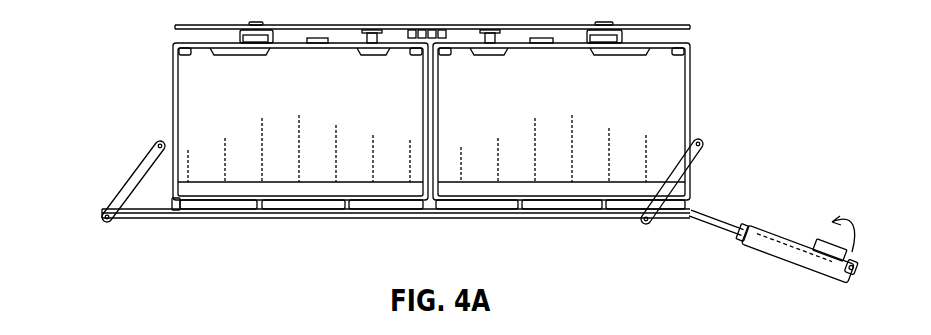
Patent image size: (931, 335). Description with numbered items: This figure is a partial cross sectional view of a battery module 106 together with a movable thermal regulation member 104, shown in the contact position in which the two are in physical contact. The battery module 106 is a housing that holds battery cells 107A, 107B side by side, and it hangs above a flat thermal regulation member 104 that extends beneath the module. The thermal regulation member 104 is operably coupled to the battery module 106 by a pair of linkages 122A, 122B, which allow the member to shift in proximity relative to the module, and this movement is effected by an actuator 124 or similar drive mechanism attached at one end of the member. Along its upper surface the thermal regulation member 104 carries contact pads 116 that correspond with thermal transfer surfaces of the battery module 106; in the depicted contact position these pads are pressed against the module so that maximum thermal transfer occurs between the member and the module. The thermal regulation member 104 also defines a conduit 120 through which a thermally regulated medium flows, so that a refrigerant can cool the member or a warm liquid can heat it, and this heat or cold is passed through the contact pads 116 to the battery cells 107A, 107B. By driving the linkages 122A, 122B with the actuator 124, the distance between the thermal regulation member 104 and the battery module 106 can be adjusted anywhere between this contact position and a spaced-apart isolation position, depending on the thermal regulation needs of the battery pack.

The thermal regulation member 104 is at (477, 205).
The battery module 106 is at (464, 111).
The battery cell 107A is at (332, 107).
The battery cell 107B is at (595, 104).
The contact pad 116 is at (287, 199).
The conduit 120 is at (205, 207).
The linkage 122A is at (693, 157).
The linkage 122B is at (130, 185).
The actuator 124 is at (785, 248).